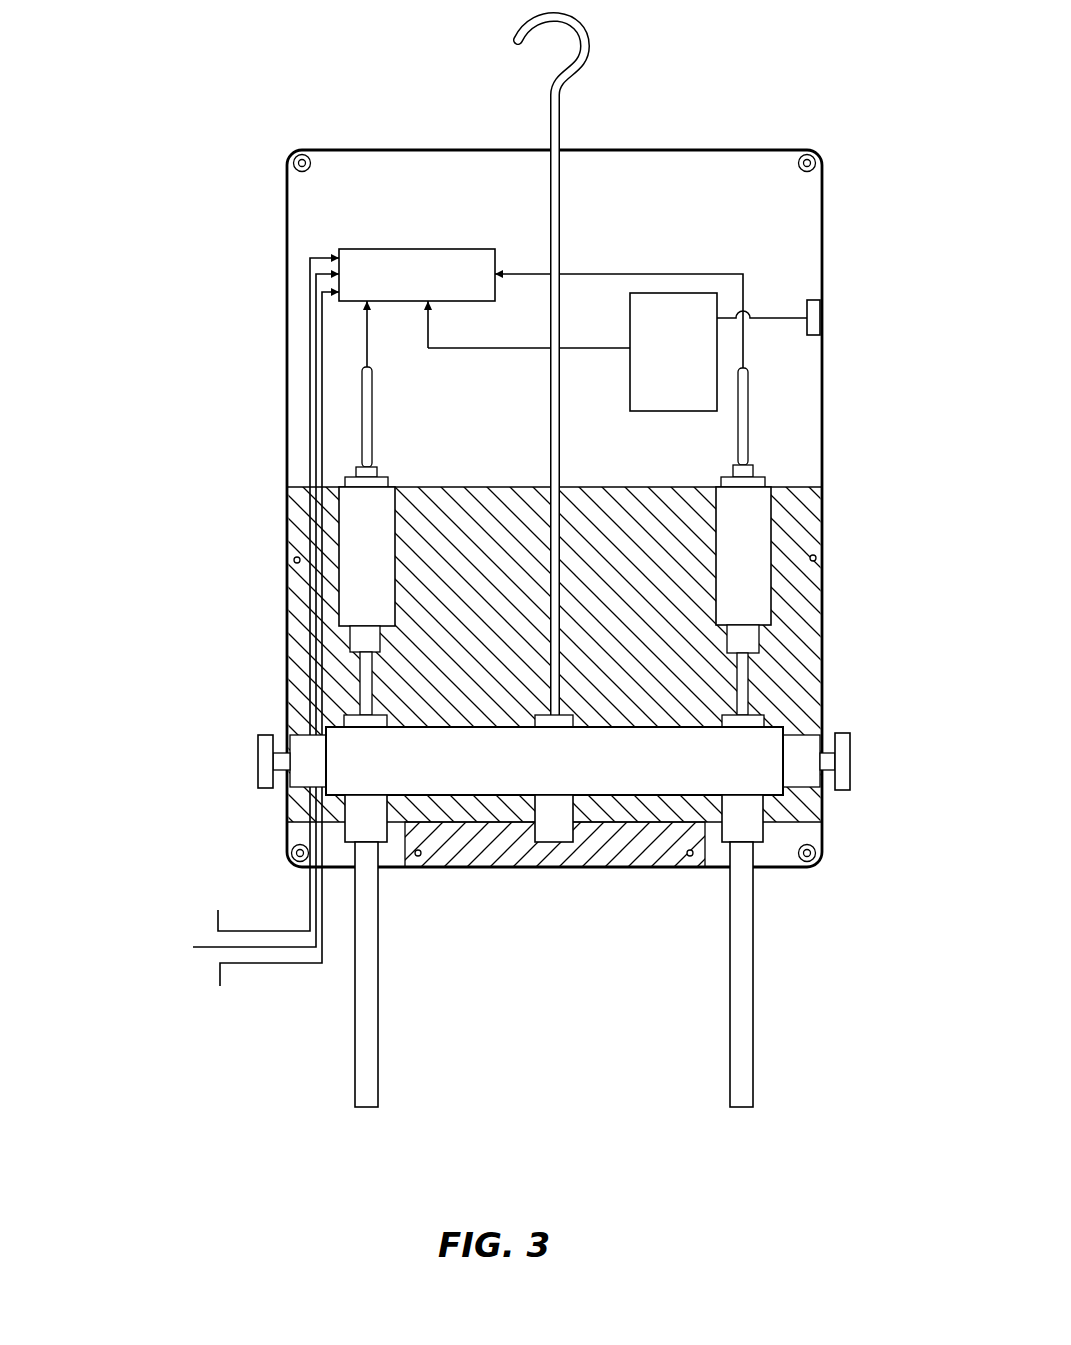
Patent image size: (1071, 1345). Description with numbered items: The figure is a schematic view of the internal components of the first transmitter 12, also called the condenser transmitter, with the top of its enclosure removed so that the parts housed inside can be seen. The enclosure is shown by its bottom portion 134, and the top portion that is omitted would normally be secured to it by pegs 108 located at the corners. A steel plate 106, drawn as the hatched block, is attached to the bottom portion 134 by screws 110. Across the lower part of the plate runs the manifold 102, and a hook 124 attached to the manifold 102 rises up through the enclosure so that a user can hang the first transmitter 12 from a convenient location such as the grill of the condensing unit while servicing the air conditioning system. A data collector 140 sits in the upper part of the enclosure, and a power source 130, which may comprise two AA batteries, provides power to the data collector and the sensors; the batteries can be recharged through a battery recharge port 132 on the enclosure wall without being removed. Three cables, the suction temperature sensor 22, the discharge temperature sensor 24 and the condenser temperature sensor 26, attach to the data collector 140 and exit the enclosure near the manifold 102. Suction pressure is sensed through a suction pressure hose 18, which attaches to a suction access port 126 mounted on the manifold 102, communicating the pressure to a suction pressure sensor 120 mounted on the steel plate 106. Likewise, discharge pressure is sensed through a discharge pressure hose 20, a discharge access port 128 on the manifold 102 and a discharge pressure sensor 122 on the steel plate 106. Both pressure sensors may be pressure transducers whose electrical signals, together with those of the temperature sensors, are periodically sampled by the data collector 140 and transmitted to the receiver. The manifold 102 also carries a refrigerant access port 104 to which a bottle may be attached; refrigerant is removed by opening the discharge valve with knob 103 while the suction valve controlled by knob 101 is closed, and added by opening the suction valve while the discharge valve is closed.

The first transmitter 12 is at (368, 150).
The suction pressure hose 18 is at (355, 1033).
The discharge pressure hose 20 is at (748, 1033).
The suction temperature sensor 22 is at (238, 928).
The discharge temperature sensor 24 is at (200, 948).
The condenser temperature sensor 26 is at (232, 965).
The knob 101 is at (263, 735).
The manifold 102 is at (668, 771).
The knob 103 is at (843, 733).
The refrigerant access port 104 is at (537, 830).
The steel plate 106 is at (521, 487).
The pegs 108 is at (288, 172).
The screws 110 is at (294, 561).
The suction pressure sensor 120 is at (350, 571).
The discharge pressure sensor 122 is at (726, 571).
The hook 124 is at (590, 16).
The suction access port 126 is at (349, 830).
The discharge access port 128 is at (725, 830).
The power source 130 is at (656, 388).
The battery recharge port 132 is at (818, 298).
The bottom portion 134 is at (588, 165).
The data collector 140 is at (419, 249).